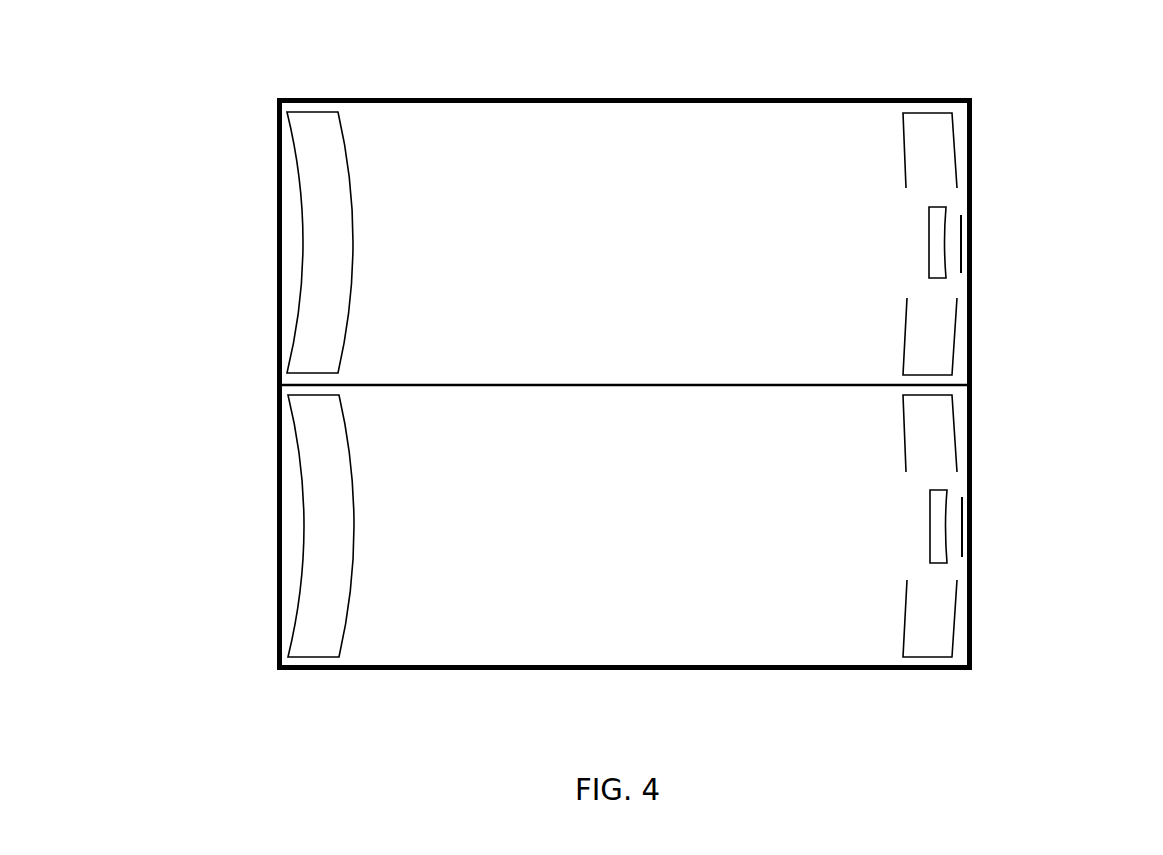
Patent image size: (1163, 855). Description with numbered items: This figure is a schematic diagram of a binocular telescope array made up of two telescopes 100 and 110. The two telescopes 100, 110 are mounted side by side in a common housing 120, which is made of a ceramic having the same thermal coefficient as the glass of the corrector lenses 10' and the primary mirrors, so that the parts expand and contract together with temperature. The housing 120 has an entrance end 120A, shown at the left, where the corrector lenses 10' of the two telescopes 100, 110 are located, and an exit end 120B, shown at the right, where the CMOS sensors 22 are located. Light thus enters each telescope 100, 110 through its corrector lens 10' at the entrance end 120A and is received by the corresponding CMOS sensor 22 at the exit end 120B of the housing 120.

The housing 120 is at (632, 98).
The entrance end 120A is at (277, 385).
The exit end 120B is at (972, 385).
The corrector lenses 10' is at (265, 357).
The telescope 100 is at (637, 252).
The telescope 110 is at (647, 532).
The CMOS sensors 22 is at (963, 235).